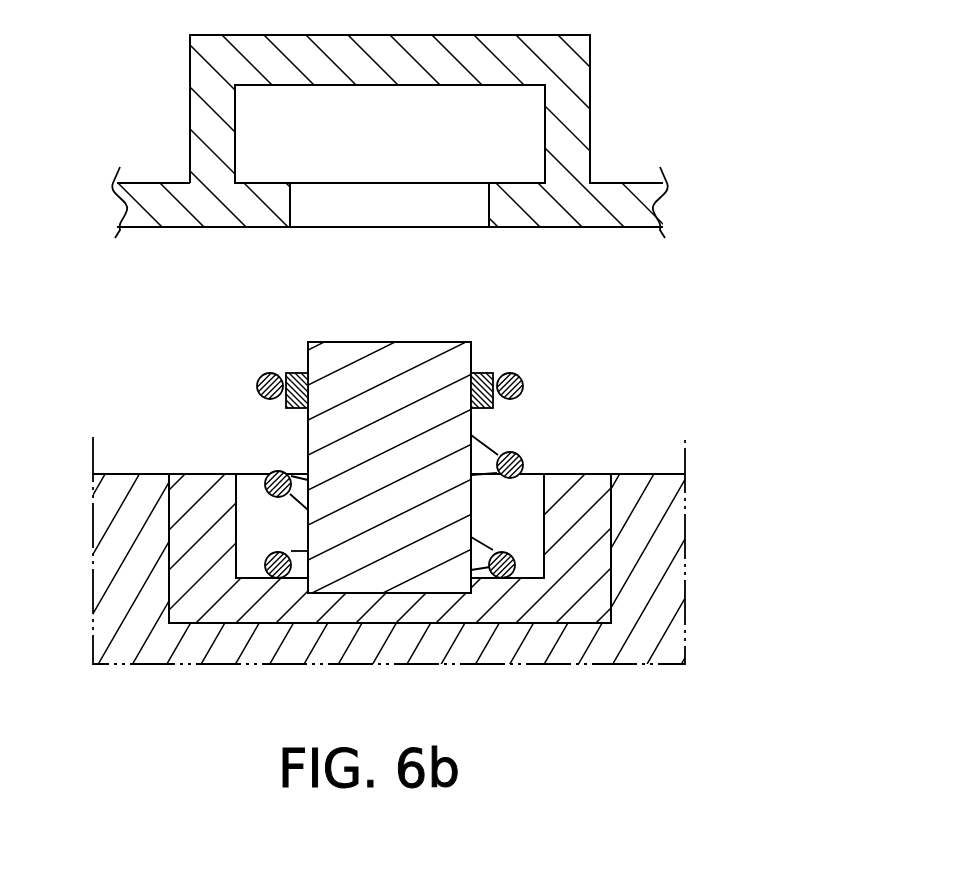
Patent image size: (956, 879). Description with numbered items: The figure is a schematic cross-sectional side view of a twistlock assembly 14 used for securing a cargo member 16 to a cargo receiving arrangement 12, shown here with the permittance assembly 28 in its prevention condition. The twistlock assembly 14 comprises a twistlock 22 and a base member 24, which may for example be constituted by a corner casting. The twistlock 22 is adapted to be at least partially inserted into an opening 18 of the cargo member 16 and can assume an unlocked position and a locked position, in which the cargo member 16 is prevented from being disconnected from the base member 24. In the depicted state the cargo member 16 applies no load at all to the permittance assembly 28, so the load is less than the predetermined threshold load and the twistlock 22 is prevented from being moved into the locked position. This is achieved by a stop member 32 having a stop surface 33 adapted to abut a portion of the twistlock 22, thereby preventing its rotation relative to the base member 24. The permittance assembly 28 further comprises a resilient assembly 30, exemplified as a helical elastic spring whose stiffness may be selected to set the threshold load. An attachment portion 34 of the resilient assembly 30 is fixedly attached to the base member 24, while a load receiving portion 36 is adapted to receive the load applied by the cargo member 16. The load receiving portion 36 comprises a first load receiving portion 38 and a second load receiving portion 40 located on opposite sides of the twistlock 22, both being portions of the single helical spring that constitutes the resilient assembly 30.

The cargo receiving arrangement 12 is at (130, 582).
The twistlock assembly 14 is at (720, 378).
The cargo member 16 is at (212, 128).
The opening 18 is at (413, 198).
The twistlock 22 is at (415, 380).
The base member 24 is at (263, 600).
The permittance assembly 28 is at (245, 423).
The resilient assembly 30 is at (273, 475).
The stop member 32 is at (290, 377).
The stop surface 33 is at (310, 393).
The attachment portion 34 is at (287, 587).
The load receiving portion 36 is at (508, 373).
The first load receiving portion 38 is at (565, 360).
The second load receiving portion 40 is at (220, 362).